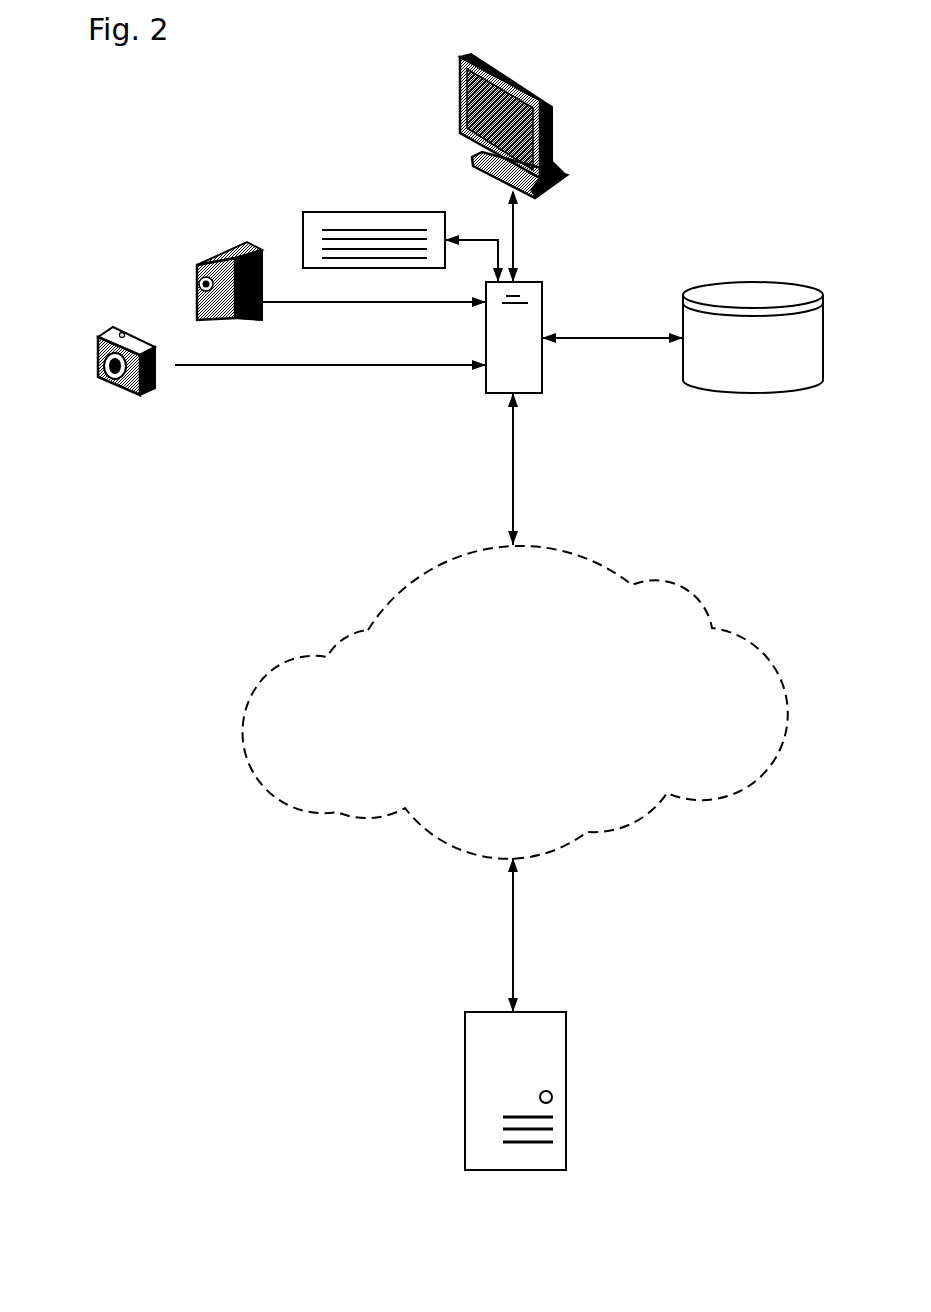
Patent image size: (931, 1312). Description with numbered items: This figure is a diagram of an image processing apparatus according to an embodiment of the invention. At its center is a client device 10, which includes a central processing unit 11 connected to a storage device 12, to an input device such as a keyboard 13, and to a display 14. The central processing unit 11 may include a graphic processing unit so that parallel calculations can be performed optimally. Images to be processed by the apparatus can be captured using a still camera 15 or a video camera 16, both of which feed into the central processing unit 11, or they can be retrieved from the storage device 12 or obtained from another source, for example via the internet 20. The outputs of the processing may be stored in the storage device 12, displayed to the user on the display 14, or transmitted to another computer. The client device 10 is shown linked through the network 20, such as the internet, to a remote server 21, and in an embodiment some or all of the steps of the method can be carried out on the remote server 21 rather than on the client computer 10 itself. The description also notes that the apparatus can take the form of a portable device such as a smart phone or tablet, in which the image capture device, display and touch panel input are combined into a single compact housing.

The client device 10 is at (585, 253).
The central processing unit 11 is at (542, 383).
The storage device 12 is at (785, 393).
The keyboard 13 is at (327, 212).
The display 14 is at (553, 122).
The still camera 15 is at (118, 388).
The video camera 16 is at (197, 264).
The network 20 is at (260, 682).
The remote server 21 is at (465, 1107).